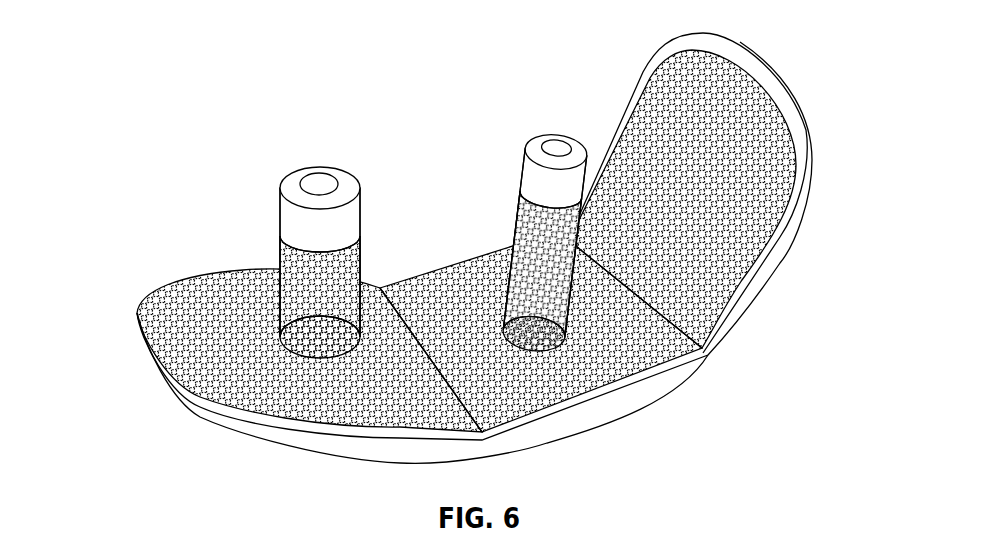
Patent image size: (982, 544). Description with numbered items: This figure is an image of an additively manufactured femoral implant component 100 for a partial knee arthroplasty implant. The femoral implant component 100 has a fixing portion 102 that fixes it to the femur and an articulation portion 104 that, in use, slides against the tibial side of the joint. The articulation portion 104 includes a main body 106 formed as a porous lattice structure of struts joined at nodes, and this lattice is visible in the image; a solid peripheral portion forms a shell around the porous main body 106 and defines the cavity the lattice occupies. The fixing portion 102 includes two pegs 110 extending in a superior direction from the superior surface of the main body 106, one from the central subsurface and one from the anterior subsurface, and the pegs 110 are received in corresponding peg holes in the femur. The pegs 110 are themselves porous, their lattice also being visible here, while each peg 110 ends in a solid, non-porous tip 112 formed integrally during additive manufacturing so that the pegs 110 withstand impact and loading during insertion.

The femoral implant component 100 is at (462, 248).
The fixing portion 102 is at (462, 248).
The articulation portion 104 is at (736, 393).
The main body 106 is at (152, 360).
The pegs 110 is at (297, 290).
The tip 112 is at (293, 216).